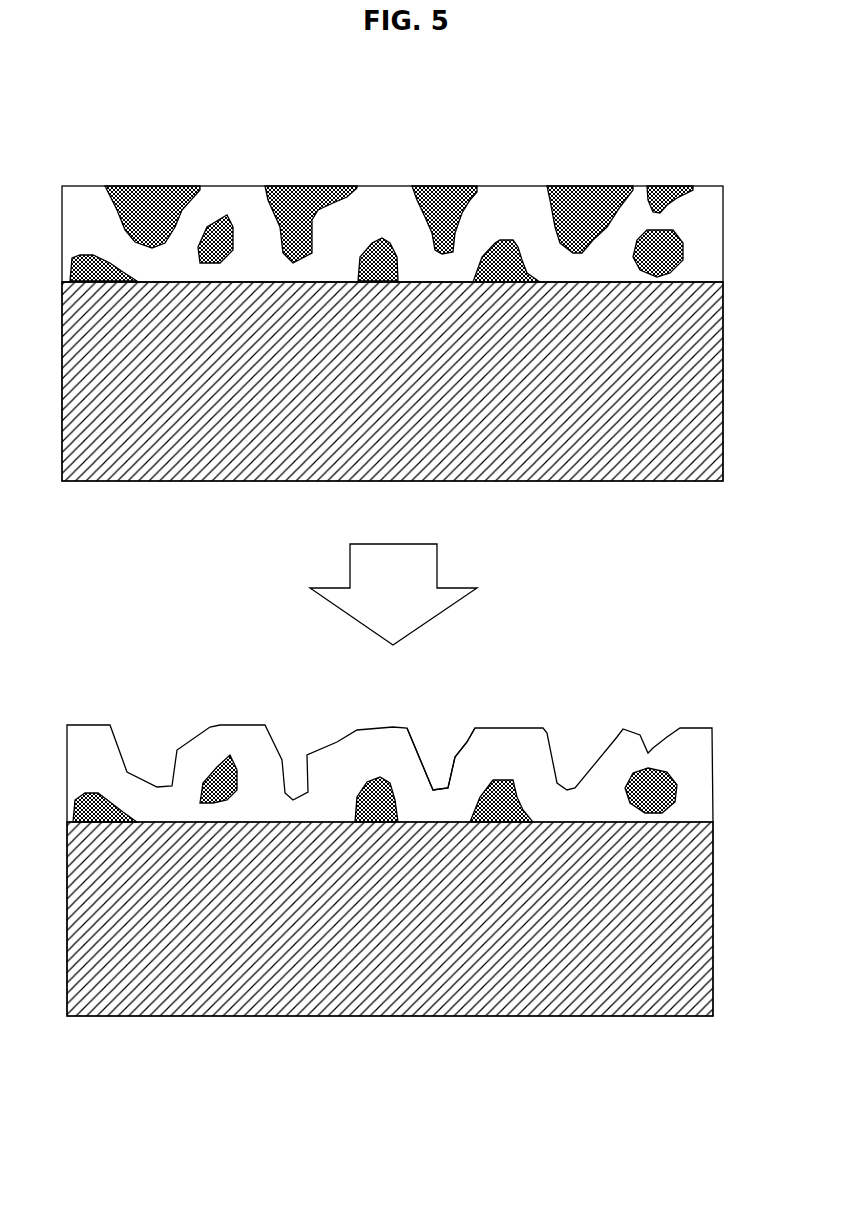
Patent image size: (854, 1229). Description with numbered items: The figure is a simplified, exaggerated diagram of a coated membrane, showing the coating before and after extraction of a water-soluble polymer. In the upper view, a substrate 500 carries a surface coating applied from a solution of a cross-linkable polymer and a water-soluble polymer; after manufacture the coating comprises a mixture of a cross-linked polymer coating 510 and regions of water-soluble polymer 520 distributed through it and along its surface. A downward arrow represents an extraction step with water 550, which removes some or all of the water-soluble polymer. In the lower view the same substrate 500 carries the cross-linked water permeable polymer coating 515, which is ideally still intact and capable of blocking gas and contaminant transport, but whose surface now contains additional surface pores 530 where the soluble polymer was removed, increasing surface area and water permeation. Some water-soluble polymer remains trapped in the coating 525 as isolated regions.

The substrate 500 is at (378, 468).
The cross-linked polymer coating 510 is at (517, 213).
The water-soluble polymer 520 is at (163, 200).
The extraction step with water 550 is at (393, 594).
The cross-linked water permeable polymer coating 515 is at (532, 780).
The surface pores 530 is at (443, 753).
The water-soluble polymer trapped in the coating 525 is at (218, 760).